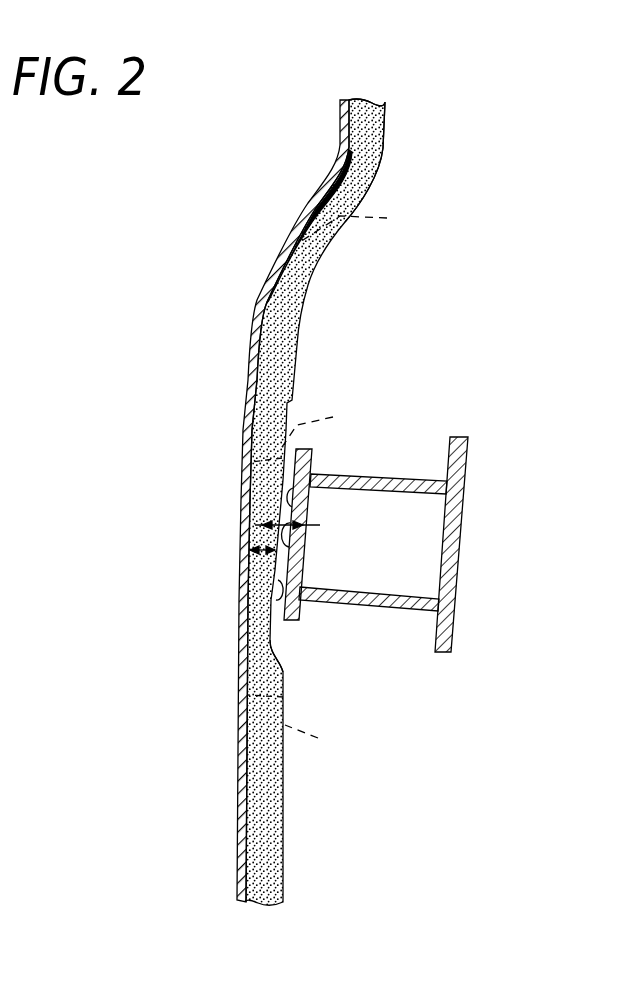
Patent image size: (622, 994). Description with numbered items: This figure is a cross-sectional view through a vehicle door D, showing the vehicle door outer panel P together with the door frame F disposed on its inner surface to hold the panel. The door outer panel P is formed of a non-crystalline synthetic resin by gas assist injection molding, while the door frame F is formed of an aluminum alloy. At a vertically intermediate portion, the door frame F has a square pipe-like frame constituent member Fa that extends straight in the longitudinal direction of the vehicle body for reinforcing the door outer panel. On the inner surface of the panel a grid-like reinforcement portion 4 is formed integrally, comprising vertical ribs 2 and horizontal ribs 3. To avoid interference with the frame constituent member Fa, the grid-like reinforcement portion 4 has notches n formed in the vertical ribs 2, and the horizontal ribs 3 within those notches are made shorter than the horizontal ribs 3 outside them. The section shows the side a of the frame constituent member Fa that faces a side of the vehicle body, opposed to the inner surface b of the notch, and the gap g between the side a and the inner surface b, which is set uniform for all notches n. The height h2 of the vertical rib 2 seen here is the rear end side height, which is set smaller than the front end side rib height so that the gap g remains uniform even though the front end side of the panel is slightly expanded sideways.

The vehicle door outer panel P is at (240, 313).
The vehicle door D is at (297, 188).
The vertical ribs 2 is at (280, 292).
The horizontal ribs 3 is at (329, 479).
The grid-like reinforcement portion 4 is at (385, 157).
The door frame F is at (445, 506).
The frame constituent member Fa is at (380, 480).
The side of the frame constituent member a is at (308, 513).
The gap g is at (290, 540).
The height of the vertical rib at the rear end side h2 is at (258, 548).
The inner surfaces of the notches b is at (270, 598).
The notches n is at (280, 632).